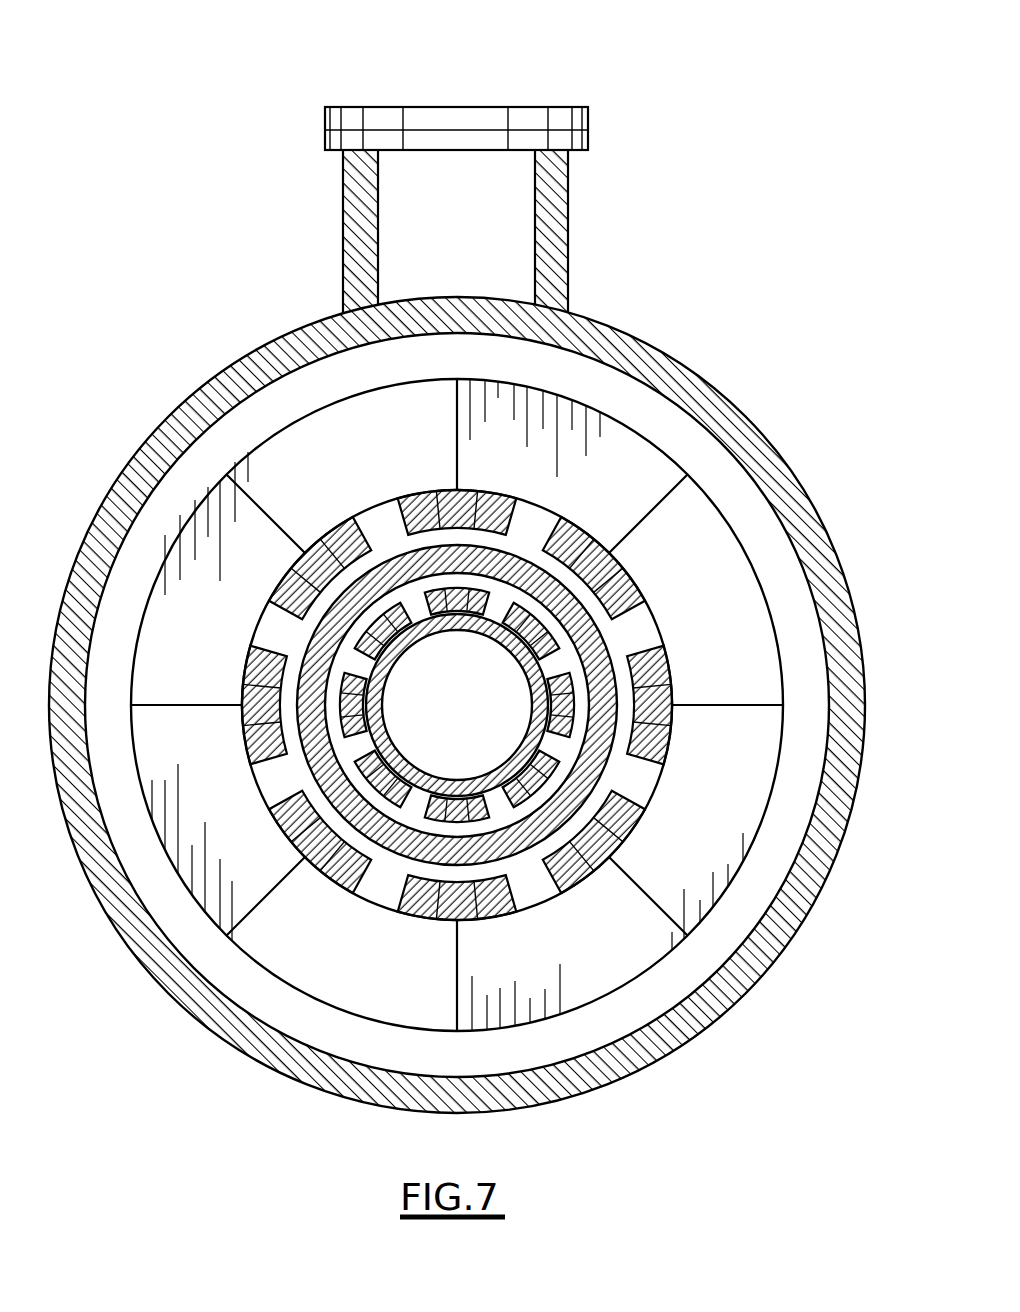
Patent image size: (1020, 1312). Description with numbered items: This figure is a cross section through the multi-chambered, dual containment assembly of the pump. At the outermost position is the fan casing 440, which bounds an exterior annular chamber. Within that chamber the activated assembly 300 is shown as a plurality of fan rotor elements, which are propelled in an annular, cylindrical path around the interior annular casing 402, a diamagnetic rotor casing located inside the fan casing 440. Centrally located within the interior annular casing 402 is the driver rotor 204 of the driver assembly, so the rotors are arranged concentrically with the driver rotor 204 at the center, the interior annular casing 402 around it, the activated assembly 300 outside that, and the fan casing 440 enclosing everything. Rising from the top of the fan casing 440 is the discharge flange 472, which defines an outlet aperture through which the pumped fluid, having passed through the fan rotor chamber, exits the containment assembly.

The discharge flange 472 is at (385, 112).
The fan casing 440 is at (686, 345).
The interior annular casing 402 is at (612, 640).
The driver rotor 204 is at (505, 713).
The activated assembly 300 is at (648, 950).